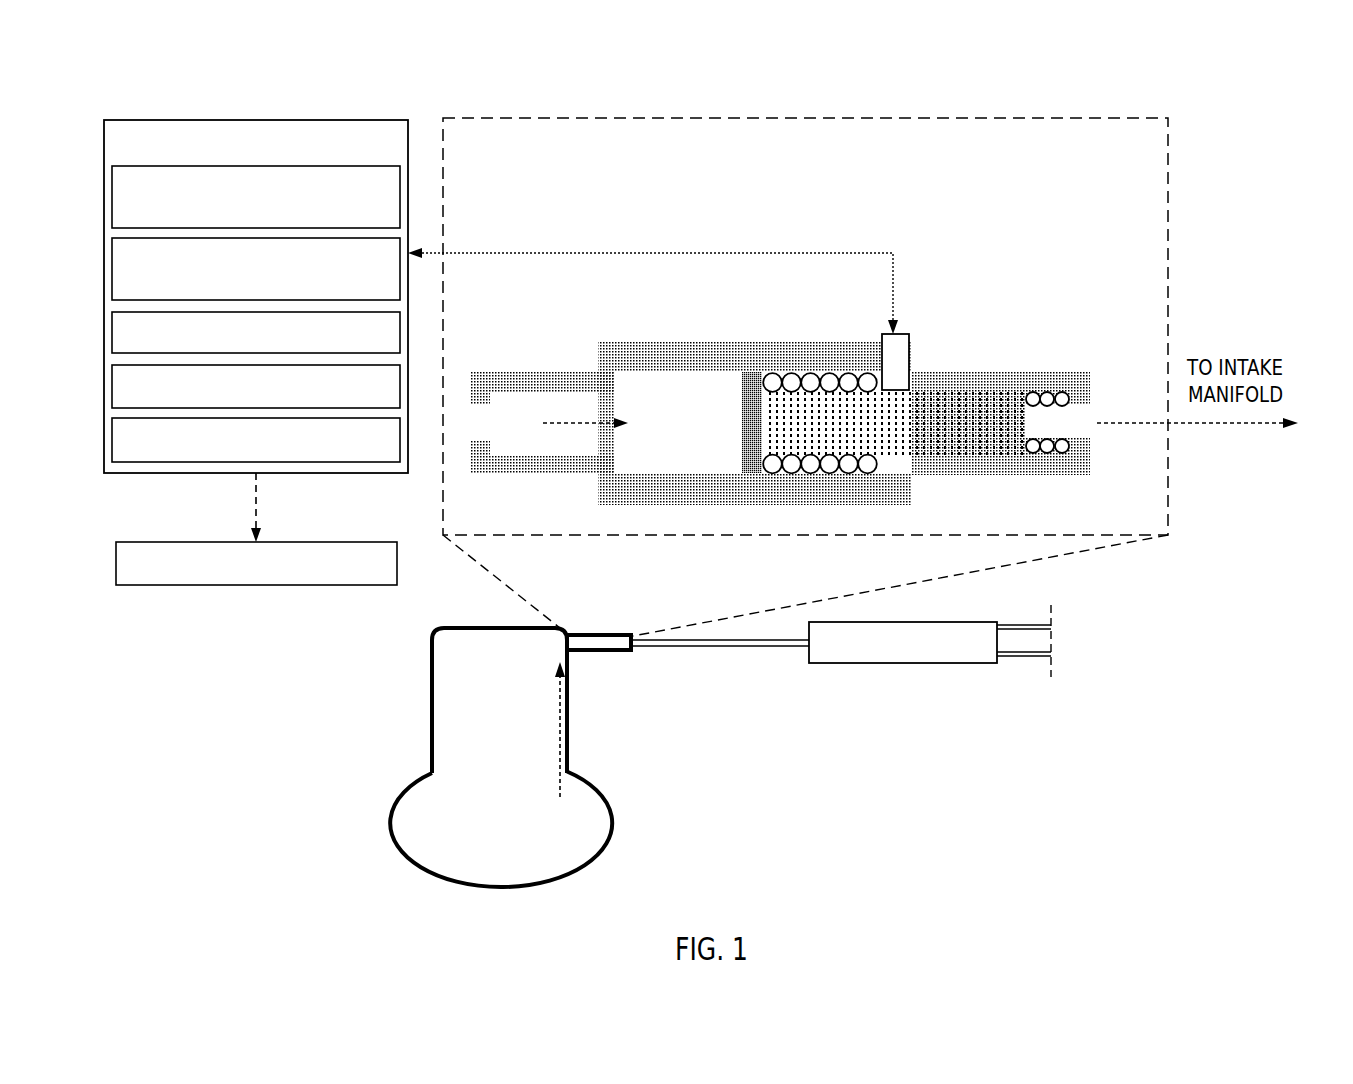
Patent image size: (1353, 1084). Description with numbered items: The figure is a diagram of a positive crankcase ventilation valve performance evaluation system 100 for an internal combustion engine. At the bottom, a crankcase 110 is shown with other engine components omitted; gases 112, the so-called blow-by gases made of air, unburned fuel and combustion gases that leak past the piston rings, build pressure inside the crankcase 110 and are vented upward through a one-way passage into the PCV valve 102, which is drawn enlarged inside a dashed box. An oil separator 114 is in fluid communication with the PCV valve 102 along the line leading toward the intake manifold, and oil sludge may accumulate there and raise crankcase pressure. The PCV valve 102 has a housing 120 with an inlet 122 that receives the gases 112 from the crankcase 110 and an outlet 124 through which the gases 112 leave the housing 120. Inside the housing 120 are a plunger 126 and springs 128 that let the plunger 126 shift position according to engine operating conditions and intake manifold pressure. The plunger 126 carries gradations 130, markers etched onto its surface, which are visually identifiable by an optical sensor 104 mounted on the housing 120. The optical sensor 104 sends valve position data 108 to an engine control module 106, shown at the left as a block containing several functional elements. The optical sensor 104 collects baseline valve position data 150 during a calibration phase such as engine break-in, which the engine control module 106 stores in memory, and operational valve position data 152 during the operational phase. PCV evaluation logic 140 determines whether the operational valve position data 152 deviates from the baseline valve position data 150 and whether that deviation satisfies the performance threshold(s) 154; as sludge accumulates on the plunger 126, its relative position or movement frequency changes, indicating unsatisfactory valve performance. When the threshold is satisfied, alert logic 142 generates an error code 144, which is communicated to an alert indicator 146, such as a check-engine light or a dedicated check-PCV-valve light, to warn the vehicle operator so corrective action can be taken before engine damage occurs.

The PCV valve performance evaluation system 100 is at (1190, 76).
The PCV valve 102 is at (805, 326).
The optical sensor 104 is at (914, 333).
The engine control module (ECM) 106 is at (398, 152).
The valve position data 108 is at (653, 276).
The crankcase 110 is at (563, 834).
The gases 112 is at (920, 595).
The oil separator 114 is at (975, 654).
The housing 120 is at (710, 501).
The inlet 122 is at (542, 422).
The outlet 124 is at (1001, 423).
The plunger 126 is at (746, 378).
The springs 128 is at (775, 364).
The gradations 130 is at (909, 432).
The PCV evaluation logic 140 is at (363, 344).
The alert logic 142 is at (317, 451).
The error code 144 is at (323, 507).
The alert indicator 146 is at (330, 574).
The baseline valve position data 150 is at (350, 219).
The operational valve position data 152 is at (352, 292).
The performance threshold(s) 154 is at (380, 397).